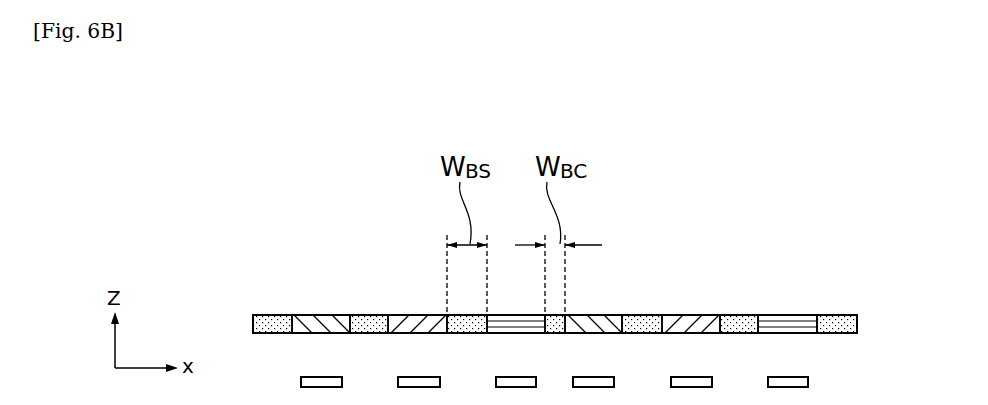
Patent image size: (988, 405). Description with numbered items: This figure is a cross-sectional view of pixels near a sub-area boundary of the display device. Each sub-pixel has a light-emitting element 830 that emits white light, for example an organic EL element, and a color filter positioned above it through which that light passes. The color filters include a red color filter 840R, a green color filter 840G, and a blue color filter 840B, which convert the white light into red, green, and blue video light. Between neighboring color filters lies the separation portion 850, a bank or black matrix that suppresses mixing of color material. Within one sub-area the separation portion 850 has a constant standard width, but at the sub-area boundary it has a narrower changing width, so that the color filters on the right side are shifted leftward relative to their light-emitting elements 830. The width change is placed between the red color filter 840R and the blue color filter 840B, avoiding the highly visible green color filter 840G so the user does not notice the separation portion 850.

The red color filter 840R is at (316, 315).
The green color filter 840G is at (410, 315).
The blue color filter 840B is at (517, 315).
The separation portion 850 is at (556, 313).
The light-emitting element 830 is at (787, 377).